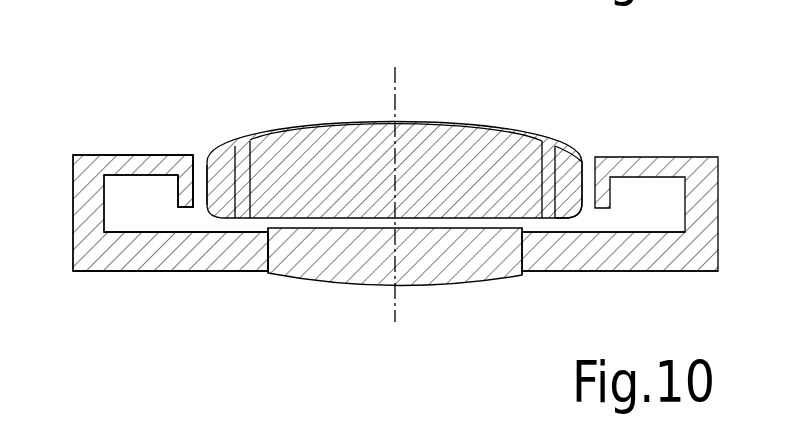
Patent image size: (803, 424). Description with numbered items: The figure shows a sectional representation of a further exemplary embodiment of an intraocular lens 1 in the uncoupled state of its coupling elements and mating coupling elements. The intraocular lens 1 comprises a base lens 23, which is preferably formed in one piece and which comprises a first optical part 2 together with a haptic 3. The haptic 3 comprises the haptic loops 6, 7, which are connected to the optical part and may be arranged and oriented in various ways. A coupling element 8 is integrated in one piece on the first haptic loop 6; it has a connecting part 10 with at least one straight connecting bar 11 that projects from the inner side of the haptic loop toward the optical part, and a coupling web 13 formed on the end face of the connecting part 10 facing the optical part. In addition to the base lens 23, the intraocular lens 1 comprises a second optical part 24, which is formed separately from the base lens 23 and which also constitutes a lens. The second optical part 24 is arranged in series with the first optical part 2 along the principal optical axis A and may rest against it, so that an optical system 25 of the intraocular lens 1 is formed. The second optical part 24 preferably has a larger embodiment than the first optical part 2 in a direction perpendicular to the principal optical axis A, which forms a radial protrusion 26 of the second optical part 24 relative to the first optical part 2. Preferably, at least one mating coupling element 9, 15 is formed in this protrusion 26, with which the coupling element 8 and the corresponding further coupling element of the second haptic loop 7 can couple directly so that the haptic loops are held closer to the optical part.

The intraocular lens 1 is at (481, 81).
The first optical part 2 is at (337, 296).
The haptic 3 is at (163, 290).
The first haptic loop 6 is at (108, 292).
The second haptic loop 7 is at (682, 290).
The coupling element 8 is at (183, 132).
The mating coupling element 9 is at (246, 121).
The connecting part 10 is at (98, 125).
The connecting bar 11 is at (147, 155).
The coupling web 13 is at (197, 195).
The further mating coupling element 15 is at (545, 117).
The base lens 23 is at (528, 297).
The second optical part 24 is at (311, 106).
The optical system 25 is at (267, 290).
The radial protrusion 26 is at (581, 133).
The principal optical axis A is at (395, 68).